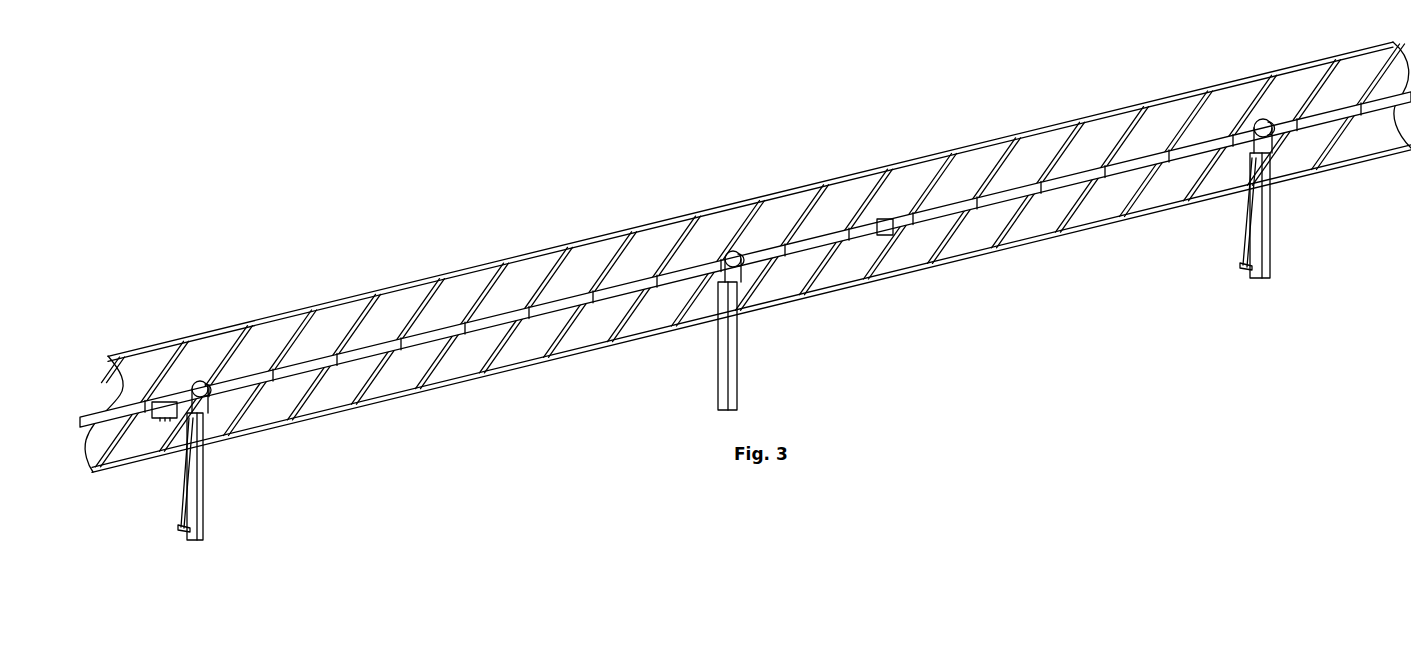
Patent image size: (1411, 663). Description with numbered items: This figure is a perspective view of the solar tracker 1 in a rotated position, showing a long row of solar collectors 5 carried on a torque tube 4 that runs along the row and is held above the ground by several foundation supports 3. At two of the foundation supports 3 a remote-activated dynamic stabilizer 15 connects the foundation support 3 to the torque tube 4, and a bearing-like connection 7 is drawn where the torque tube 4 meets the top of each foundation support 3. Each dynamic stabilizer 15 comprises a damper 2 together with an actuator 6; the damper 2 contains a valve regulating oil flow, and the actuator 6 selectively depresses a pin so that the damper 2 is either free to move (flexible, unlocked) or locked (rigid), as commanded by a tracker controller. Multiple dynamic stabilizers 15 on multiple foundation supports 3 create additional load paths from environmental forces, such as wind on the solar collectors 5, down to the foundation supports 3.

The solar tracker 1 is at (520, 202).
The damper 2 is at (1260, 203).
The foundation support 3 is at (1268, 252).
The torque tube 4 is at (458, 342).
The solar collector 5 is at (396, 290).
The actuator 6 is at (1283, 137).
The bearing assembly 7 is at (1262, 125).
The dynamic stabilizer 15 is at (1370, 242).